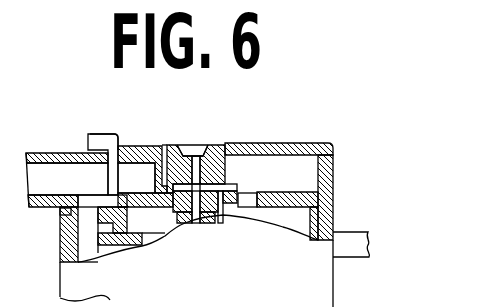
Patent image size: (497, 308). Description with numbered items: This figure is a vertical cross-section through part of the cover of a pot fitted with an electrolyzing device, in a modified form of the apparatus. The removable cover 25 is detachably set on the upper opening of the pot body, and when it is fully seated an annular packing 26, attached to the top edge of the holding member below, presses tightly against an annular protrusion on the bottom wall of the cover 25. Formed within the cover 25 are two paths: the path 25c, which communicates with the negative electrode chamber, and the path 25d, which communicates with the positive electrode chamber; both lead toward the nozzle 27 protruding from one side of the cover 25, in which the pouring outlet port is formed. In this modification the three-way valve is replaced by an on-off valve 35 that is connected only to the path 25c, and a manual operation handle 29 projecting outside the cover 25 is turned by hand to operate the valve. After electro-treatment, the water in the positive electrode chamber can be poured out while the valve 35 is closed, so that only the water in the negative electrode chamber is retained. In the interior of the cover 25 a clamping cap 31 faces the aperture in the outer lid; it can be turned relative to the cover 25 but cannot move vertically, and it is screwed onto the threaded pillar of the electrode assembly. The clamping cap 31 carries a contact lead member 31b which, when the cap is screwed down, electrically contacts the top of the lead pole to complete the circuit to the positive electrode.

The cover 25 is at (267, 131).
The path 25c is at (91, 210).
The path 25d is at (135, 200).
The annular packing 26 is at (63, 215).
The nozzle 27 is at (40, 203).
The manual operation handle 29 is at (88, 140).
The clamping cap 31 is at (188, 150).
The contact lead member 31b is at (201, 150).
The on-off valve 35 is at (117, 132).